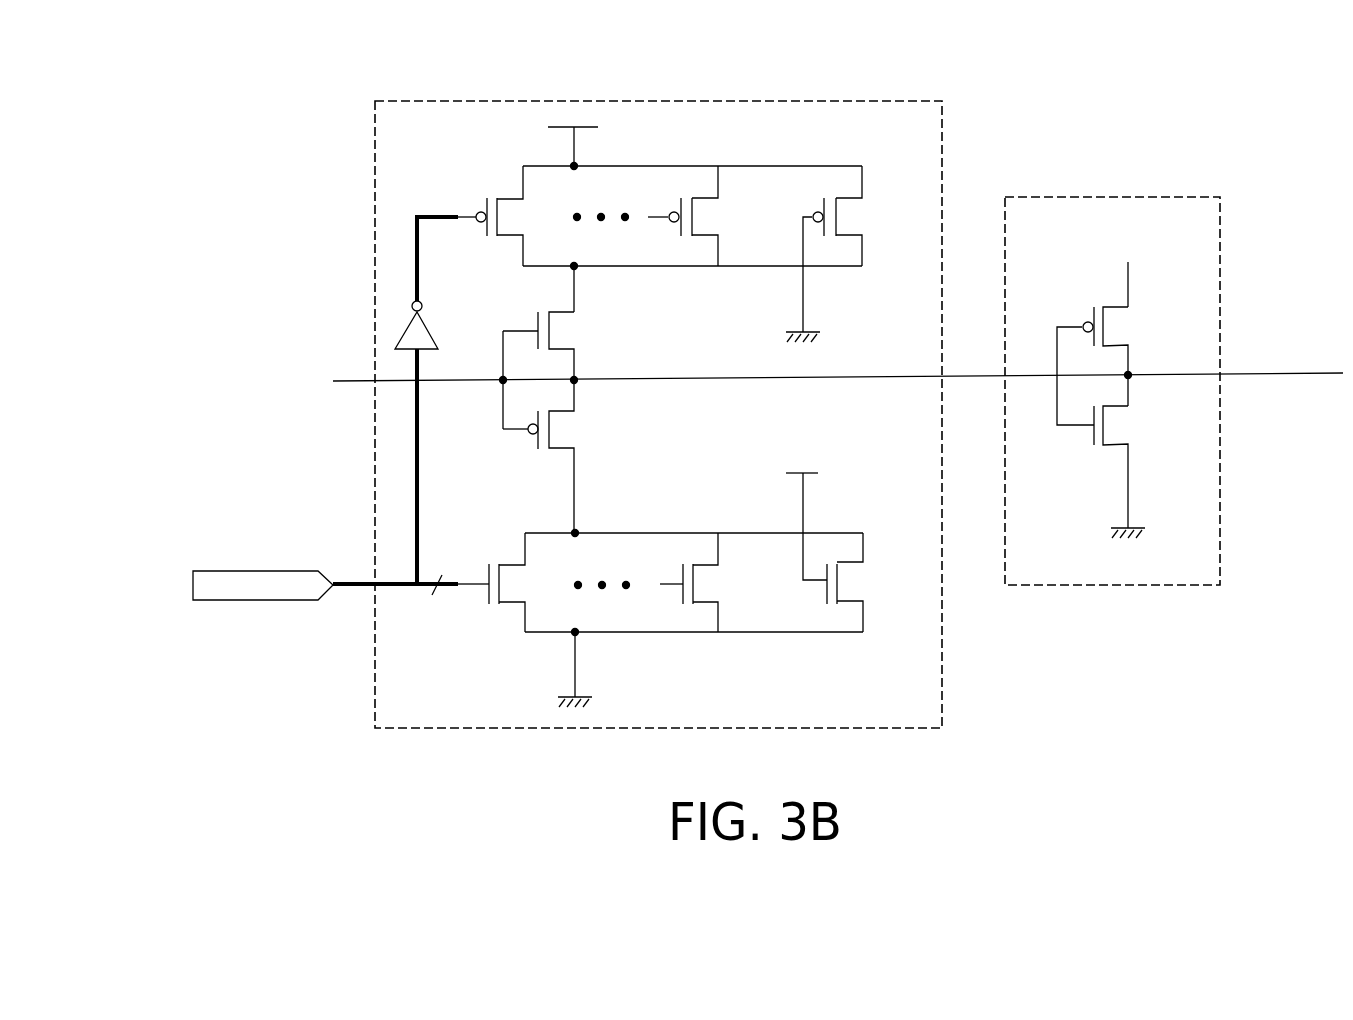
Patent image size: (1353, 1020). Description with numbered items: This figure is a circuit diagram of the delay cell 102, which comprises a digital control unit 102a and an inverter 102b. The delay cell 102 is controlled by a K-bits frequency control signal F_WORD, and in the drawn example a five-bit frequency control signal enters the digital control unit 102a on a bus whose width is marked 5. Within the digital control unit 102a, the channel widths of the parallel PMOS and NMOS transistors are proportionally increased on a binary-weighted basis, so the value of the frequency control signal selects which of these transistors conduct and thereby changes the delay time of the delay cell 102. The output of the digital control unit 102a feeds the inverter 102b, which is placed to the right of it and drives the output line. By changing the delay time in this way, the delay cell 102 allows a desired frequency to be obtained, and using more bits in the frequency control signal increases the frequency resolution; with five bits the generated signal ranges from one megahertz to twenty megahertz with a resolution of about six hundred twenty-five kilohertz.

The delay cell 102 is at (340, 124).
The digital control unit 102a is at (690, 100).
The inverter 102b is at (1087, 194).
The 5-bit fuse word bus 5 is at (427, 229).